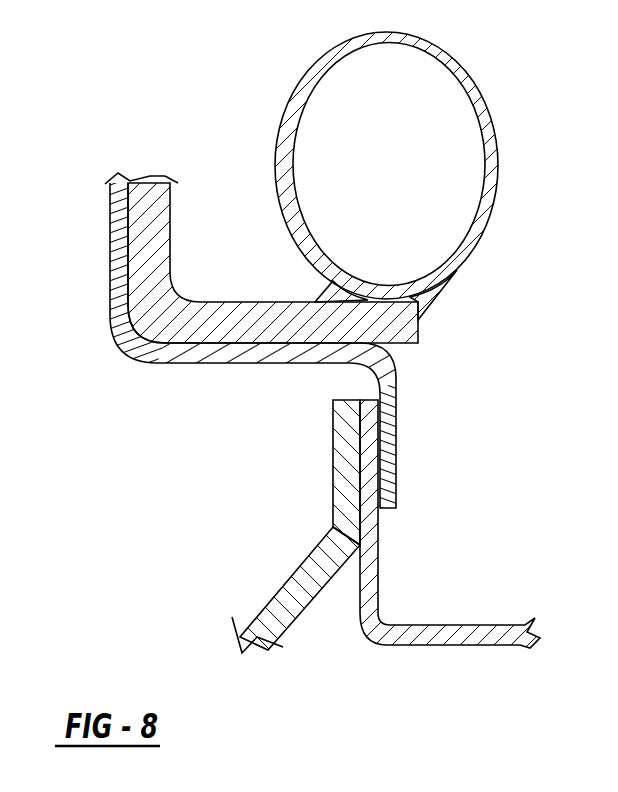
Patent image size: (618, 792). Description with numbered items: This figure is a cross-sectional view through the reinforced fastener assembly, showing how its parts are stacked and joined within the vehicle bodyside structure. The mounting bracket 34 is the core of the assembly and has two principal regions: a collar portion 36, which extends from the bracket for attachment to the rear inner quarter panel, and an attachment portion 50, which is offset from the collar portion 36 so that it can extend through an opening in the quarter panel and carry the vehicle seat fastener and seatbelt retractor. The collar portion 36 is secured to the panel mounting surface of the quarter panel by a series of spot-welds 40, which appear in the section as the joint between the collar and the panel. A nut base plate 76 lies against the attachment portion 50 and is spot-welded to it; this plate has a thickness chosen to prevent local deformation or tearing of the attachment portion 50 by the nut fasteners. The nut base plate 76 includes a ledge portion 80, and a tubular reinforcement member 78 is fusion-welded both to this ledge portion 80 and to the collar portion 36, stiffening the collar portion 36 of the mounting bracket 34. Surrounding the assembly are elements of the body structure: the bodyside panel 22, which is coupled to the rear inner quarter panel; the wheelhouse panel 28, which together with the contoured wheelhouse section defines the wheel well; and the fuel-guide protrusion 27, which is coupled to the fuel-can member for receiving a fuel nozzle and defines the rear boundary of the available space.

The tubular reinforcement member 78 is at (448, 53).
The nut base plate 76 is at (257, 300).
The mounting bracket 34 is at (110, 221).
The attachment portion 50 is at (110, 273).
The ledge portion 80 is at (405, 343).
The spot-welds 40 is at (392, 441).
The collar portion 36 is at (397, 492).
The wheelhouse panel 28 is at (312, 550).
The bodyside panel 22 is at (380, 553).
The fuel-guide protrusion 27 is at (500, 627).